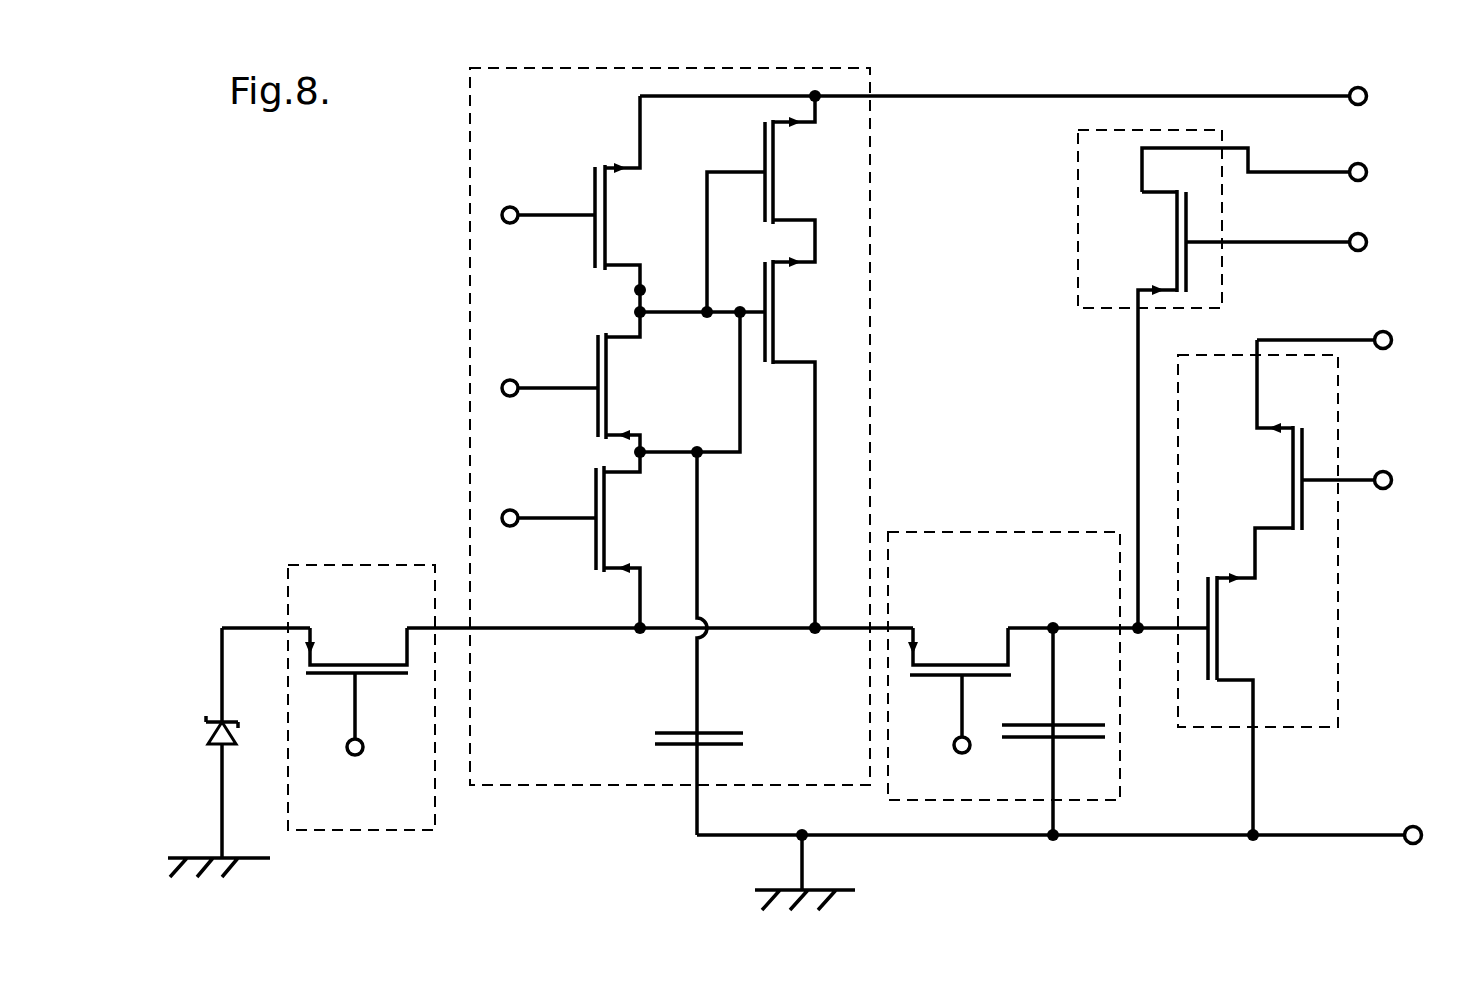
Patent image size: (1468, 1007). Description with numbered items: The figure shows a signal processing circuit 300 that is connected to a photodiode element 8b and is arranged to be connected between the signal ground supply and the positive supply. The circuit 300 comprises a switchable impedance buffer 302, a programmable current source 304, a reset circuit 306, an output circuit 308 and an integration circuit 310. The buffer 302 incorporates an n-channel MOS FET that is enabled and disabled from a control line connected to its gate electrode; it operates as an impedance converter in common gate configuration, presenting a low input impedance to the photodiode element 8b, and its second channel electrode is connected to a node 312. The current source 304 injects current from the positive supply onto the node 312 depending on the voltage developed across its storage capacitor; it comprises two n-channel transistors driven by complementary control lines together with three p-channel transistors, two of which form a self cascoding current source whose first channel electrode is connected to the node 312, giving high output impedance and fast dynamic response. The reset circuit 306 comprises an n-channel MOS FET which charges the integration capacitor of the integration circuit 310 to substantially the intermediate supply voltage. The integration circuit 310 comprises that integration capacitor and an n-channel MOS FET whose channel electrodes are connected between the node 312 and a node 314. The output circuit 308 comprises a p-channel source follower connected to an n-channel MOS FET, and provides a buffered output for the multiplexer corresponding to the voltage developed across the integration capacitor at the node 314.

The signal processing circuit 300 is at (370, 366).
The switchable impedance buffer 302 is at (363, 574).
The programmable current source 304 is at (872, 214).
The reset circuit 306 is at (1088, 204).
The output circuit 308 is at (1310, 592).
The integration circuit 310 is at (994, 541).
The node 312 is at (576, 634).
The node 314 is at (1102, 628).
The photodiode 8b is at (217, 737).